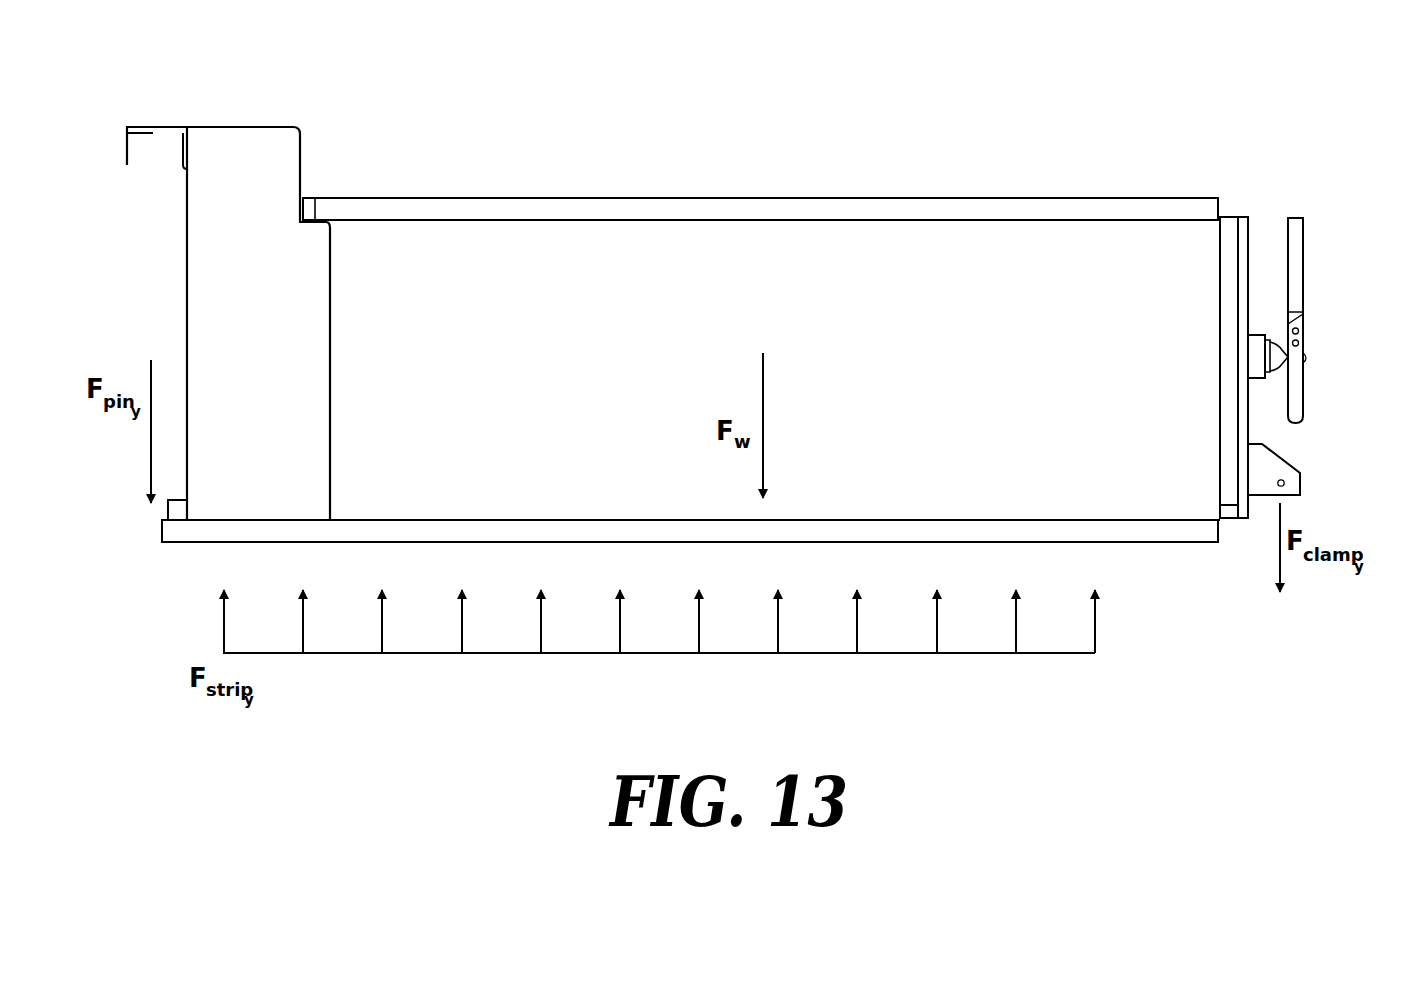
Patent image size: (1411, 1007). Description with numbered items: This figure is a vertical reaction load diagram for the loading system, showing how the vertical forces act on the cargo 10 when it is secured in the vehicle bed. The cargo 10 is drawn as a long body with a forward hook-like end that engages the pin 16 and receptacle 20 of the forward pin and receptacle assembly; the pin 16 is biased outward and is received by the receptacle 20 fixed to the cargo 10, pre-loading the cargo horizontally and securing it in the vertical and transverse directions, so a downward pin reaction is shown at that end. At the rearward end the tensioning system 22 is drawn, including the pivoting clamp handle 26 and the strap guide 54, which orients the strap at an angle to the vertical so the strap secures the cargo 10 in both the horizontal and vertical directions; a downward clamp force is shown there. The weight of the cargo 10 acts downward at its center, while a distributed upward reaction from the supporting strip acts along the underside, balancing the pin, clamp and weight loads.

The cargo 10 is at (779, 170).
The pin 16 is at (162, 535).
The receptacle 20 is at (170, 542).
The tensioning system 22 is at (1325, 388).
The clamp handle 26 is at (1300, 260).
The strap guide 54 is at (1300, 478).